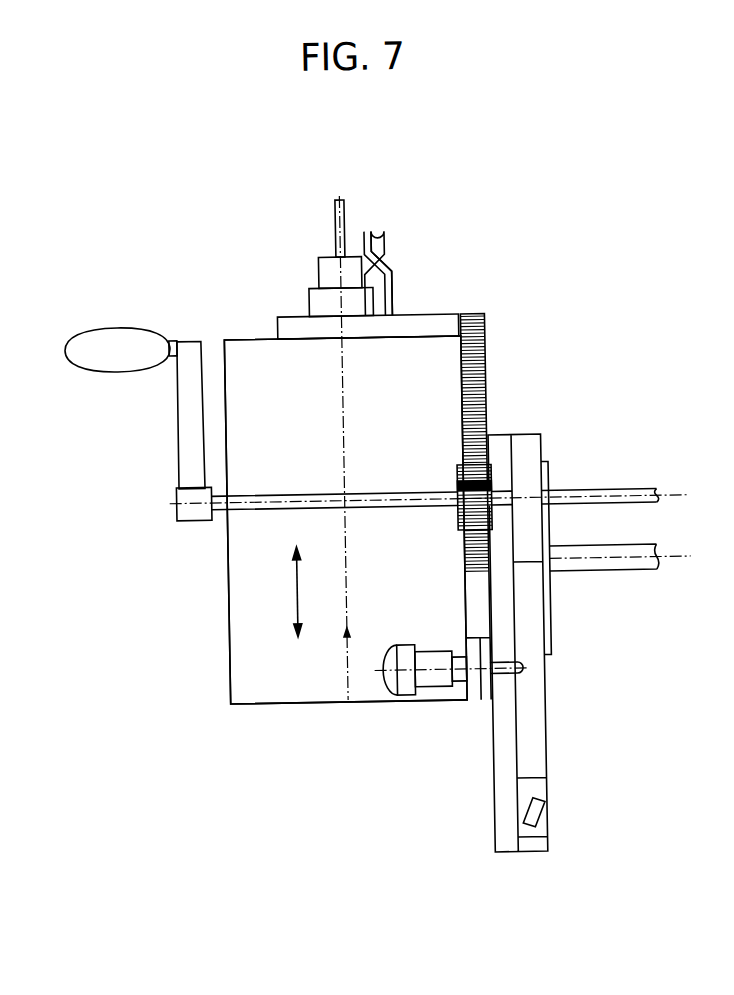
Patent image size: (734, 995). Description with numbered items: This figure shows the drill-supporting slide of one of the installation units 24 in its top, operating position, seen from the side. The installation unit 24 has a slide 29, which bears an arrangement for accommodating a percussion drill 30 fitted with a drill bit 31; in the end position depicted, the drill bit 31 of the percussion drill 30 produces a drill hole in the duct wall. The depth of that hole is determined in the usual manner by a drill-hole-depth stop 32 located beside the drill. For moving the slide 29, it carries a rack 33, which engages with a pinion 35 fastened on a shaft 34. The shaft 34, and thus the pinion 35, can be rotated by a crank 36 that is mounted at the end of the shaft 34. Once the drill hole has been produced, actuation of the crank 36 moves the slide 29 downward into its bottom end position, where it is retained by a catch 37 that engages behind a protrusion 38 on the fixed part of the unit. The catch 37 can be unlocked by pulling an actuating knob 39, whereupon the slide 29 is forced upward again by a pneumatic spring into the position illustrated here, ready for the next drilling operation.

The installation unit 24 is at (214, 686).
The slide 29 is at (227, 573).
The percussion drill 30 is at (337, 283).
The drill bit 31 is at (345, 229).
The drill-hole-depth stop 32 is at (386, 261).
The rack 33 is at (486, 339).
The shaft 34 is at (616, 493).
The pinion 35 is at (491, 480).
The crank 36 is at (192, 395).
The catch 37 is at (517, 673).
The protrusion 38 is at (535, 816).
The actuating knob 39 is at (422, 676).